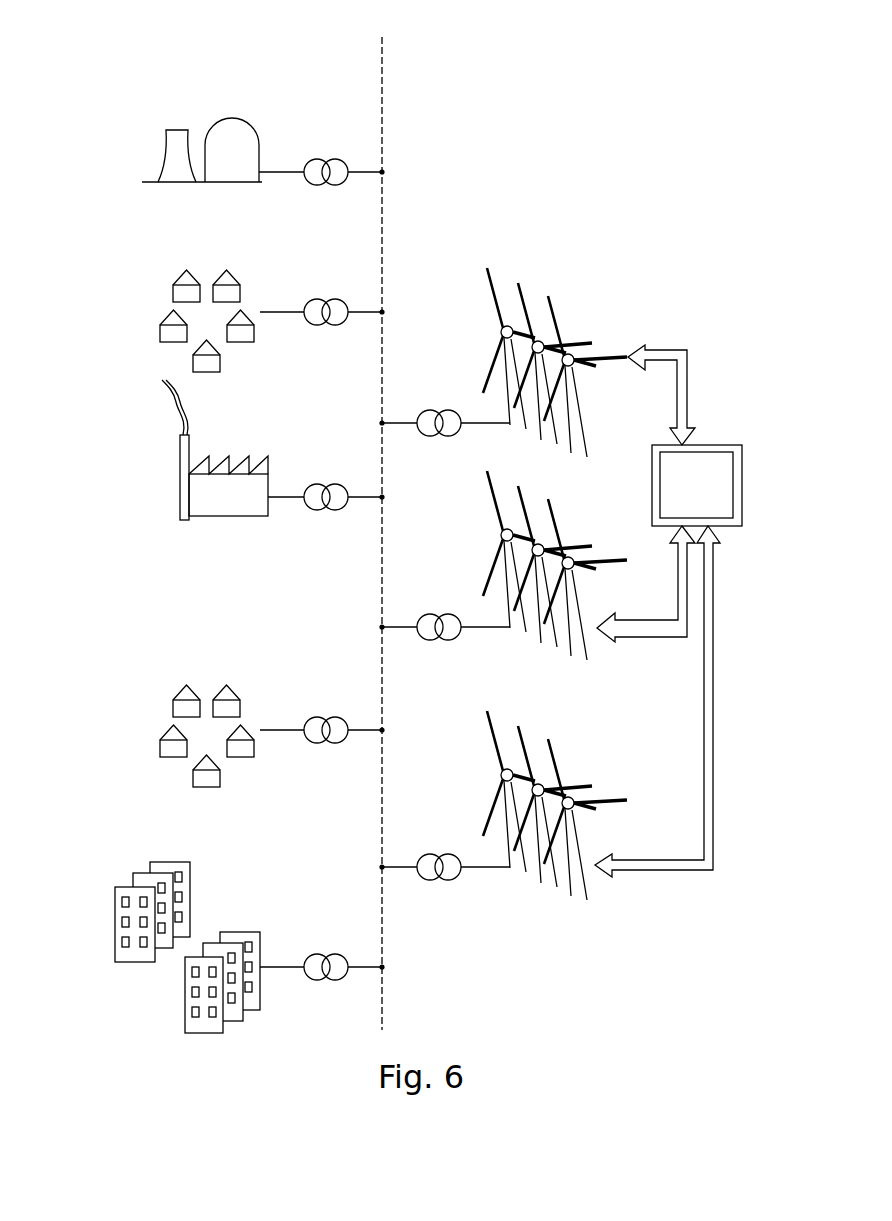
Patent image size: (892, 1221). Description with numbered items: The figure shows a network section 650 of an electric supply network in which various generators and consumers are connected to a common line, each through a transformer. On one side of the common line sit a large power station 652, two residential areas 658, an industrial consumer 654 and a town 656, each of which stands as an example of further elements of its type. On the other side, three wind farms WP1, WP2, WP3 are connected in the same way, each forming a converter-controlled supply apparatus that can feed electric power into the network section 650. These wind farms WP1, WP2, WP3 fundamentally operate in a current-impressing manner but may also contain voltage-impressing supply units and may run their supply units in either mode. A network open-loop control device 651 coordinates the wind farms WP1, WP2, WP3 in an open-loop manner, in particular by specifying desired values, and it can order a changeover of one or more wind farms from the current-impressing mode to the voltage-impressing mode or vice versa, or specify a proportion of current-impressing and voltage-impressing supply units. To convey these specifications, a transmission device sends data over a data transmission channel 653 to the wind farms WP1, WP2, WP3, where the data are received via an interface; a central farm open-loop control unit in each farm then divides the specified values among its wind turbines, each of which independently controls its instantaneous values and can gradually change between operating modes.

The network section 650 is at (556, 100).
The network open-loop control device 651 is at (712, 428).
The large power station 652 is at (212, 100).
The data transmission channel 653 is at (657, 348).
The industrial consumer 654 is at (158, 428).
The town 656 is at (153, 838).
The residential areas 658 is at (168, 268).
The wind farm WP1 is at (572, 755).
The wind farm WP2 is at (580, 514).
The wind farm WP3 is at (572, 290).